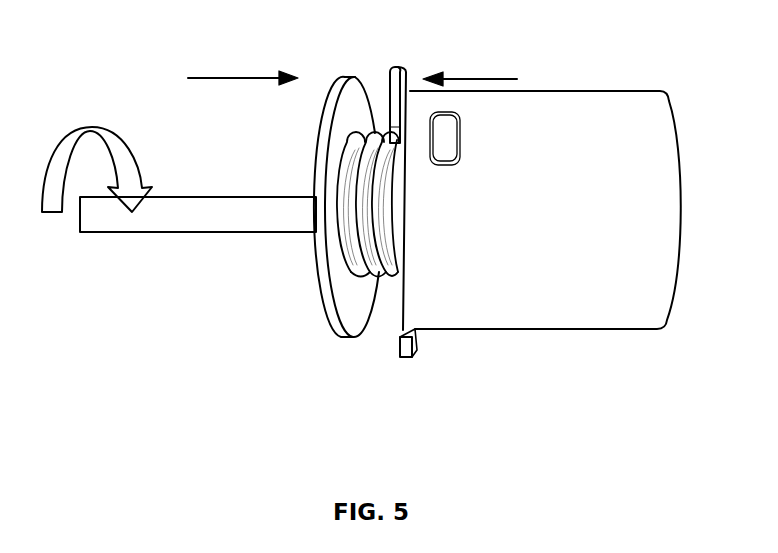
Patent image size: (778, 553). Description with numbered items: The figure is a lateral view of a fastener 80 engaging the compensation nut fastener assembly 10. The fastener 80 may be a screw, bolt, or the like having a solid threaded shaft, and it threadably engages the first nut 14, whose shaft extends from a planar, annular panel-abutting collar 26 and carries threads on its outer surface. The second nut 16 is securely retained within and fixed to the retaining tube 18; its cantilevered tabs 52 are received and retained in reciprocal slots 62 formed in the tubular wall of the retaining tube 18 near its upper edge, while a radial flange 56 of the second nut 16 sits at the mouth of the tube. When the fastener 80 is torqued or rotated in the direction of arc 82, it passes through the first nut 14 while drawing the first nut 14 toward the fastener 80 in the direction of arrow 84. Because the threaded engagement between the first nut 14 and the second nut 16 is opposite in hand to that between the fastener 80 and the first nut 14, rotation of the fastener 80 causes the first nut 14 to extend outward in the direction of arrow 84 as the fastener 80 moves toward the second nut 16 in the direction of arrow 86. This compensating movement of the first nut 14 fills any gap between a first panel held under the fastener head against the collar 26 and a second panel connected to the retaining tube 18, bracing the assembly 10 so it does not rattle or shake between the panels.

The compensation nut fastener assembly 10 is at (533, 337).
The first nut 14 is at (332, 307).
The second nut 16 is at (405, 357).
The retaining tube 18 is at (655, 185).
The collar 26 is at (320, 122).
The cantilevered tabs 52 is at (448, 140).
The radial flange 56 is at (403, 67).
The reciprocal slots 62 is at (460, 125).
The fastener 80 is at (220, 232).
The arc 82 is at (80, 127).
The arrow 84 is at (485, 78).
The arrow 86 is at (240, 78).